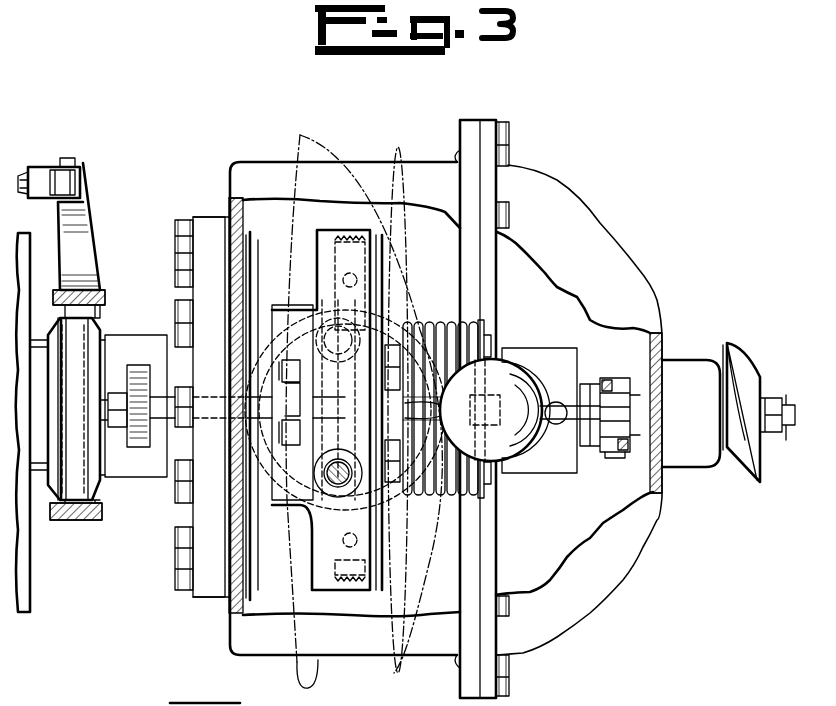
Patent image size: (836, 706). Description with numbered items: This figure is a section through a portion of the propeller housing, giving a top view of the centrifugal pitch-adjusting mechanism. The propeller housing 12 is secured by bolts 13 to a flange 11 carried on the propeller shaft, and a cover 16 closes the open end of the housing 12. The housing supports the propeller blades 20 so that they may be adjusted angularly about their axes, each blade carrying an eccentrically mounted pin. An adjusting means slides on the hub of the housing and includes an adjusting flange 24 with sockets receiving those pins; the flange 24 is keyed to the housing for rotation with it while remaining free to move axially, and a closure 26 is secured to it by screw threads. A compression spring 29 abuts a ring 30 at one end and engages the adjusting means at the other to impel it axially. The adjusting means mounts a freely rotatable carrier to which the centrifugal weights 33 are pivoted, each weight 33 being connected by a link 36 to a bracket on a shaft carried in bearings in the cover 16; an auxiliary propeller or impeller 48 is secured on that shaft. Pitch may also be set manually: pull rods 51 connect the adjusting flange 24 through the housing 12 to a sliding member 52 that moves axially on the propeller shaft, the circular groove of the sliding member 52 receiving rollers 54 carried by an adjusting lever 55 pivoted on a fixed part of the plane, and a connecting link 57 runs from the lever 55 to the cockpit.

The flange 11 is at (200, 598).
The propeller housing 12 is at (247, 160).
The bolts 13 is at (182, 212).
The cover 16 is at (593, 593).
The propeller blades 20 is at (322, 677).
The adjusting flange 24 is at (328, 236).
The closure 26 is at (383, 268).
The compression spring 29 is at (469, 322).
The ring 30 is at (494, 486).
The weights 33 is at (505, 370).
The link 36 is at (556, 424).
The auxiliary propeller 48 is at (743, 375).
The pull rods 51 is at (163, 416).
The sliding member 52 is at (160, 330).
The rollers 54 is at (96, 316).
The adjusting lever 55 is at (77, 236).
The connecting link 57 is at (42, 168).